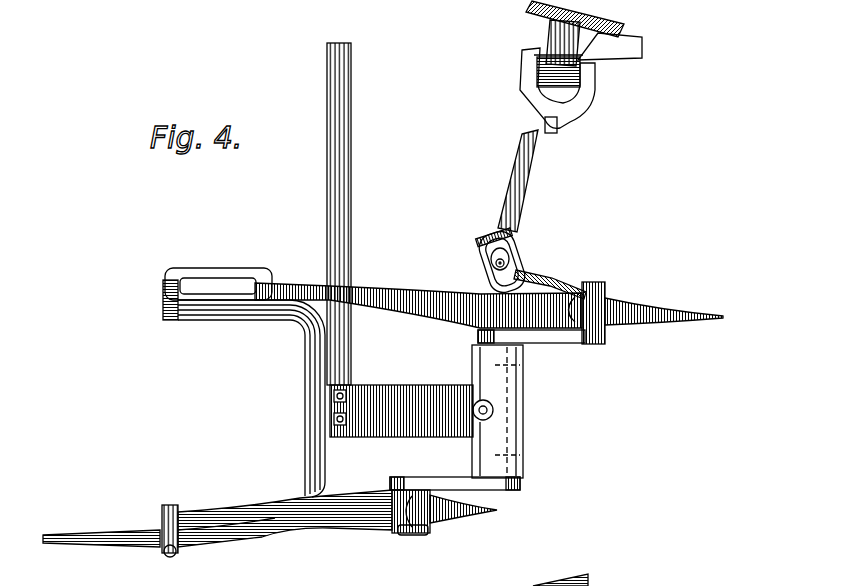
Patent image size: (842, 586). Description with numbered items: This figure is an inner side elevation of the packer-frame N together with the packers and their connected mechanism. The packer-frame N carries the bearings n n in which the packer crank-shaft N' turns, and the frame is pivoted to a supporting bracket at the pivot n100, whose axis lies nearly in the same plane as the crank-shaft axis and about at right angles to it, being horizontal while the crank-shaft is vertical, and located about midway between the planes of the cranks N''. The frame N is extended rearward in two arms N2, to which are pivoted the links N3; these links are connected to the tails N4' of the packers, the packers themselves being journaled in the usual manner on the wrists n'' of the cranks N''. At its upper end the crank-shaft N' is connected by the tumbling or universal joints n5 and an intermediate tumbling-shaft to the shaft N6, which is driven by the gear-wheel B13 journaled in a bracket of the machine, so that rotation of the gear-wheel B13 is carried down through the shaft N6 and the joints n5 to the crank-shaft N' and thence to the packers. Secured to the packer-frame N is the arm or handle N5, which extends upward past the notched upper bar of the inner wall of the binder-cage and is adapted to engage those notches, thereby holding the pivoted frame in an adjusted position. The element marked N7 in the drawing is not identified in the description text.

The arm or handle N5 is at (352, 206).
The gear-wheel B13 is at (540, 18).
The shaft N6 is at (532, 64).
The tumbling or universal joints n5 is at (522, 198).
The tail of packer N4' is at (470, 394).
The wrist of crank n'' is at (507, 405).
The crank N'' is at (487, 410).
The packer crank-shaft N' is at (516, 411).
The bearing n is at (499, 414).
The pivot n100 is at (493, 407).
The packer-frame N is at (401, 411).
The arm of packer-frame N2 is at (232, 322).
The link N3 is at (220, 276).
The thin bar N7 is at (50, 545).